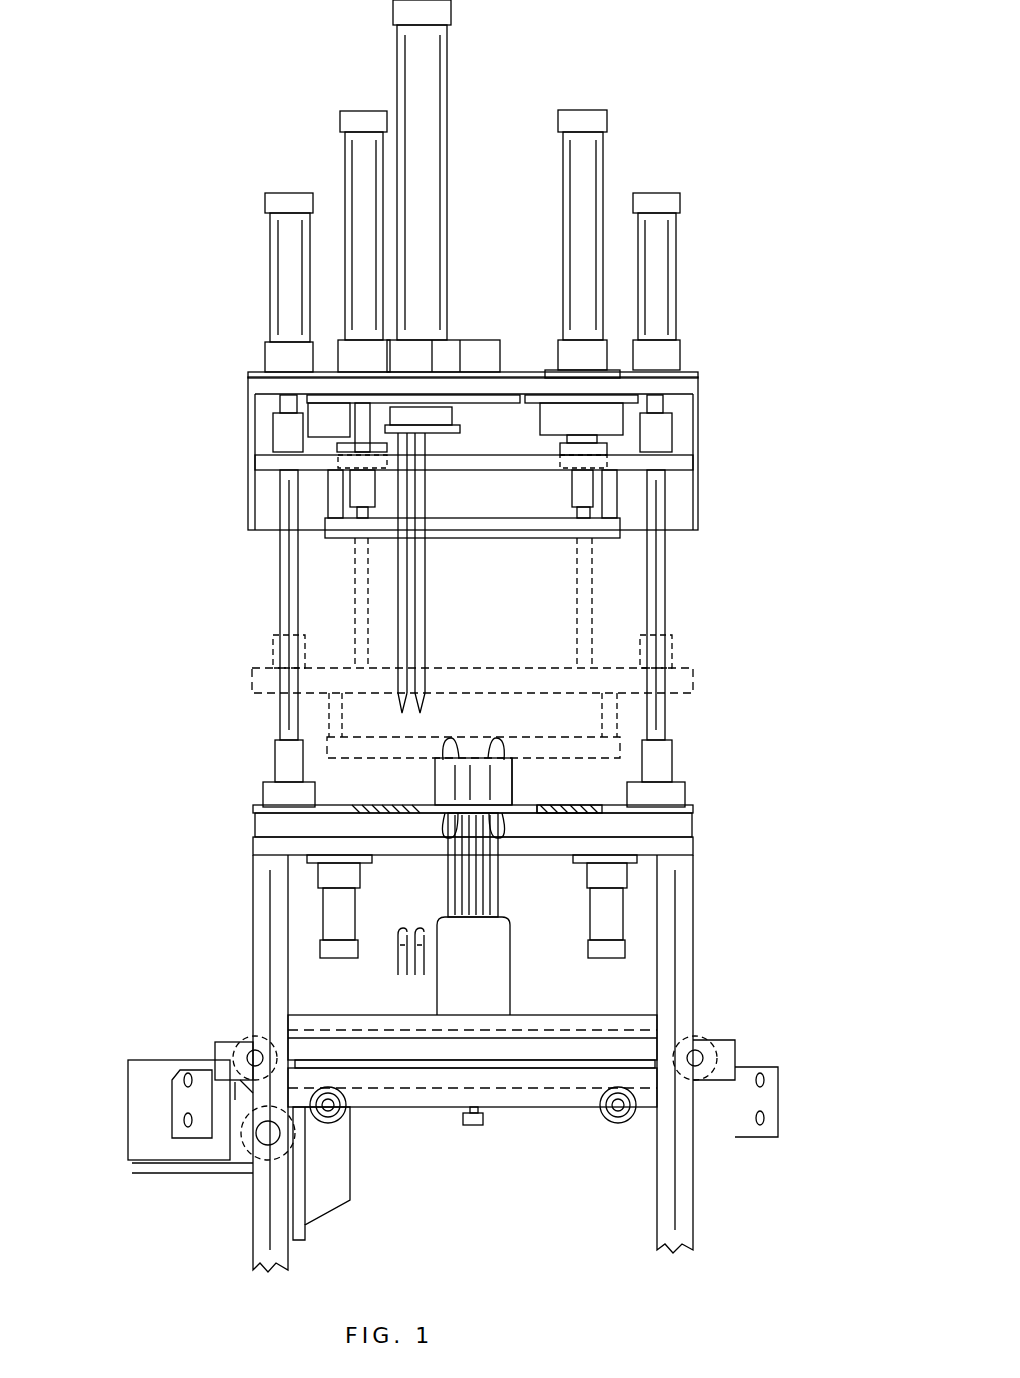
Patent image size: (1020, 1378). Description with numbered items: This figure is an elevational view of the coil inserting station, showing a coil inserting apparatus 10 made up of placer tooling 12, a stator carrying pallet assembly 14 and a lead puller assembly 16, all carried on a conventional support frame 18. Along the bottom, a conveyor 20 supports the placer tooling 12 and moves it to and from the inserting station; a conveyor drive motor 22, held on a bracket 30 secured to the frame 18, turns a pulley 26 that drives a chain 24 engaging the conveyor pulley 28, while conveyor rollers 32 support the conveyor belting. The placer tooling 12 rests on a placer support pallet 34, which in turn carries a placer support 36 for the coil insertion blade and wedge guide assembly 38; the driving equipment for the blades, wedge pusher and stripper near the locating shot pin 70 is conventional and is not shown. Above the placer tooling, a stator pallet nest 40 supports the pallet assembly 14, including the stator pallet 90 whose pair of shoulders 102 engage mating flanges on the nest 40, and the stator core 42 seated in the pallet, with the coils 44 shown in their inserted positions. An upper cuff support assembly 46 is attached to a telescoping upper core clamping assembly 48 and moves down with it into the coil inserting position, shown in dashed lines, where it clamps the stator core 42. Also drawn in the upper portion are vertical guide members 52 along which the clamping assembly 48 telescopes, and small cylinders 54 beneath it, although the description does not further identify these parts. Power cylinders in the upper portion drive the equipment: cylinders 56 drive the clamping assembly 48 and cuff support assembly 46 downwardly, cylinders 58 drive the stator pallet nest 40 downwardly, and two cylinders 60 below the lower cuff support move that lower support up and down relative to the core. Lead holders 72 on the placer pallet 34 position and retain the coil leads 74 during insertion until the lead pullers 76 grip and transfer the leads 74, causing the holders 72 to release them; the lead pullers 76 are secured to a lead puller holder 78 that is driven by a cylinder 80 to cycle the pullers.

The coil inserting apparatus 10 is at (722, 547).
The placer tooling 12 is at (547, 975).
The stator carrying pallet assembly 14 is at (535, 760).
The lead puller assembly 16 is at (393, 568).
The support frame 18 is at (683, 913).
The conveyor 20 is at (330, 1020).
The conveyor drive motor 22 is at (135, 1070).
The chain 24 is at (240, 1105).
The pulley 26 is at (245, 1150).
The conveyor pulley 28 is at (250, 1058).
The bracket 30 is at (188, 1118).
The conveyor rollers 32 is at (605, 1120).
The placer support pallet 34 is at (527, 1030).
The placer support 36 is at (500, 950).
The coil insertion blade and wedge guide assembly 38 is at (480, 885).
The stator pallet nest 40 is at (695, 813).
The stator core 42 is at (505, 760).
The coils 44 is at (470, 735).
The upper cuff support assembly 46 is at (515, 530).
The telescoping upper core clamping assembly 48 is at (690, 463).
The guide column 52 is at (657, 620).
The stripper cylinder 54 is at (572, 492).
The cylinders 56 is at (348, 158).
The cylinders 58 is at (278, 250).
The cylinders 60 is at (607, 923).
The locating shot pin 70 is at (473, 1125).
The lead holders 72 is at (418, 930).
The coil leads 74 is at (443, 838).
The lead pullers 76 is at (420, 595).
The lead puller holder 78 is at (452, 413).
The cylinder 80 is at (437, 188).
The stator pallet 90 is at (555, 805).
The shoulders 102 is at (560, 803).